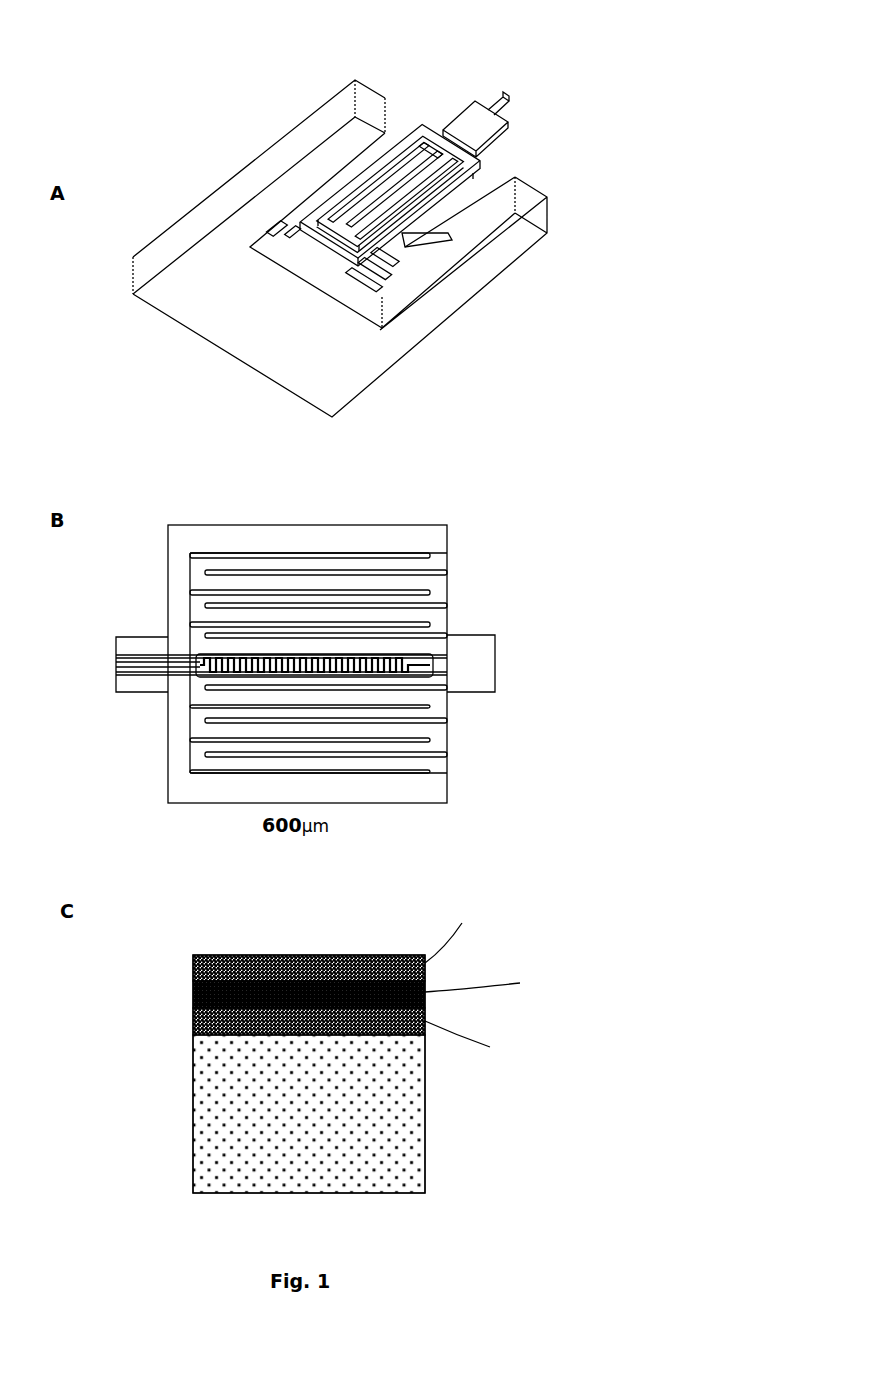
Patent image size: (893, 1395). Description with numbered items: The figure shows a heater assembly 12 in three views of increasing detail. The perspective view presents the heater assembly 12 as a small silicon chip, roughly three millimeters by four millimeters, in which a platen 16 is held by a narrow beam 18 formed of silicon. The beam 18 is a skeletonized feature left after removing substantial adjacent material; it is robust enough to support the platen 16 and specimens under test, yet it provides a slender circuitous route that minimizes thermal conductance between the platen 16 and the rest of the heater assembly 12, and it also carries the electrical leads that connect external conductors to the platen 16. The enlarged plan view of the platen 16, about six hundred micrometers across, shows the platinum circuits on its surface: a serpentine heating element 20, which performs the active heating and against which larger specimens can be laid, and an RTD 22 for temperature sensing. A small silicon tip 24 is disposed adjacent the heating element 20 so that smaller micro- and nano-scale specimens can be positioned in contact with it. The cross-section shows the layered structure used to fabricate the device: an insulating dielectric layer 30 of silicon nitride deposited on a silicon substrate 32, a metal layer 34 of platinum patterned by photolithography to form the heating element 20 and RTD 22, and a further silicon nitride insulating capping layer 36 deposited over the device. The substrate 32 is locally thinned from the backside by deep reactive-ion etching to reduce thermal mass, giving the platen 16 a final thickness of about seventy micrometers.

In FIG. 1A, the heater assembly 12 is at (243, 153).
In FIG. 1A, the platen 16 is at (463, 112).
In FIG. 1B, the platen 16 is at (165, 797).
In FIG. 1A, the beam 18 is at (469, 175).
In FIG. 1B, the serpentine heating element 20 is at (250, 598).
In FIG. 1B, the RTD 22 is at (336, 658).
In FIG. 1B, the silicon tip 24 is at (487, 633).
In FIG. 1C, the insulating dielectric layer 30 is at (205, 1022).
In FIG. 1C, the substrate 32 is at (205, 1143).
In FIG. 1C, the metal layer 34 is at (205, 994).
In FIG. 1C, the insulating capping layer 36 is at (222, 967).